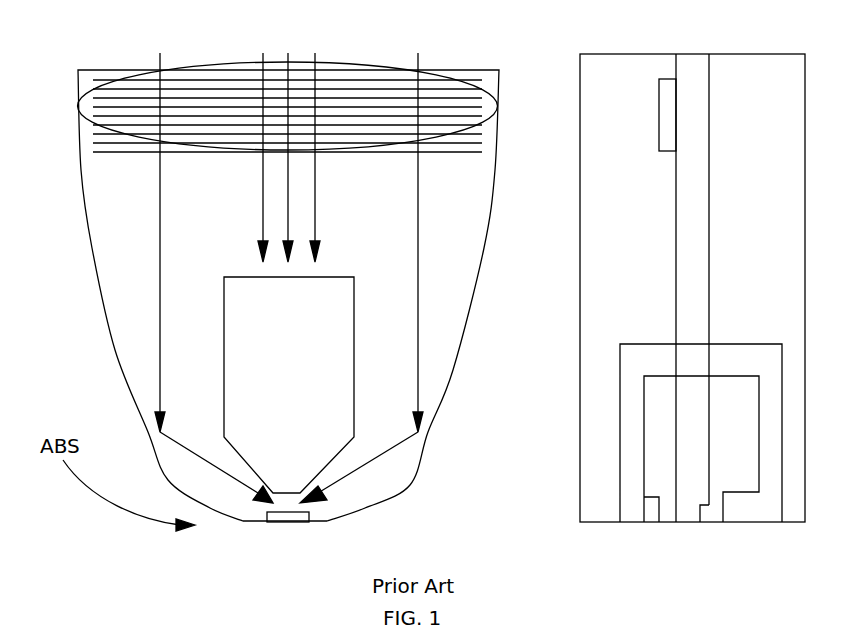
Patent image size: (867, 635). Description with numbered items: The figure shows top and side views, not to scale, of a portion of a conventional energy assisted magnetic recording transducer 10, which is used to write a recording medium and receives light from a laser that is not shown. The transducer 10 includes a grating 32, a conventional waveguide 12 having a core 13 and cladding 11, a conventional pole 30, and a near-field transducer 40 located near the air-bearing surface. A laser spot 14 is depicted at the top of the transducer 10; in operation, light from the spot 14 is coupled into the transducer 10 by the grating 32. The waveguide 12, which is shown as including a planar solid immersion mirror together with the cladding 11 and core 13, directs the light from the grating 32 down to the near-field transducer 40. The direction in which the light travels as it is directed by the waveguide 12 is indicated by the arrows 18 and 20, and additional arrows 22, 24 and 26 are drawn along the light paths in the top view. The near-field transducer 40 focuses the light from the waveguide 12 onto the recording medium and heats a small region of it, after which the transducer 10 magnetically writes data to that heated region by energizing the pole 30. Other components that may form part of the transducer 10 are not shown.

The energy assisted magnetic recording (EAMR) transducer 10 is at (93, 49).
The cladding 11 is at (580, 150).
The waveguide 12 is at (478, 266).
The core 13 is at (709, 103).
The laser spot 14 is at (497, 100).
The arrow 18 is at (418, 370).
The arrow 20 is at (160, 345).
The right center beam 22 is at (315, 203).
The left center beam 24 is at (263, 203).
The central light beams 26 is at (291, 62).
The pole 30 is at (222, 345).
The grating 32 is at (125, 162).
The near-field transducer (NFT) 40 is at (290, 522).